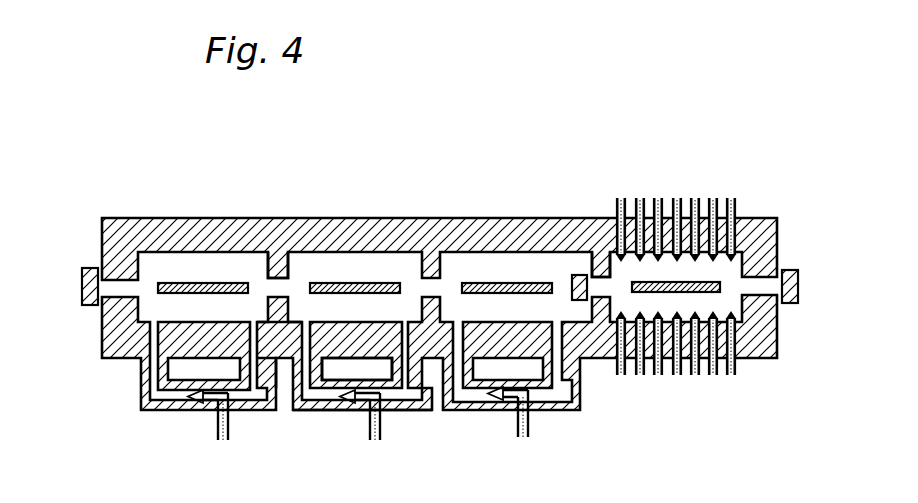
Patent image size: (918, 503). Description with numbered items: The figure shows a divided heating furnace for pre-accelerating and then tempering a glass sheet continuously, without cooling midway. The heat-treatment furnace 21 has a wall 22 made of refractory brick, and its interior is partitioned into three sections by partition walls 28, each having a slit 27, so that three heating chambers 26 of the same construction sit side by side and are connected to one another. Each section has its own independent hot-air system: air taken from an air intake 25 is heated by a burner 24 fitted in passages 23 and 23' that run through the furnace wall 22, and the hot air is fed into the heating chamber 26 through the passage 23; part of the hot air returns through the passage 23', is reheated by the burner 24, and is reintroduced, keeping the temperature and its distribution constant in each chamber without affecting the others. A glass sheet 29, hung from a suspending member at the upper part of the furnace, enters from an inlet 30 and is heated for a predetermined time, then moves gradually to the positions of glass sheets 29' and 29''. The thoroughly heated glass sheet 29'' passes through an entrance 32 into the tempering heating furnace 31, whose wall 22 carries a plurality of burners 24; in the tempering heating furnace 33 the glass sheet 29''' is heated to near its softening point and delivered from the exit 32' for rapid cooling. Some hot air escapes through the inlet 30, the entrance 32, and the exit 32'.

The heat-treatment furnace 21 is at (542, 170).
The furnace wall 22 is at (487, 222).
The passage 23 is at (293, 412).
The passage 23' is at (405, 403).
The burner 24 is at (687, 210).
The air intake 25 is at (417, 402).
The heating chamber 26 is at (202, 262).
The slit 27 is at (273, 287).
The partition wall 28 is at (264, 259).
The glass sheet 29 is at (203, 275).
The glass sheet 29' is at (355, 274).
The glass sheet 29'' is at (507, 274).
The glass sheet 29''' is at (728, 259).
The inlet 30 is at (116, 286).
The tempering heating furnace 31 is at (740, 153).
The entrance 32 is at (575, 236).
The exit 32' is at (779, 339).
The tempering heating furnace 33 is at (602, 252).